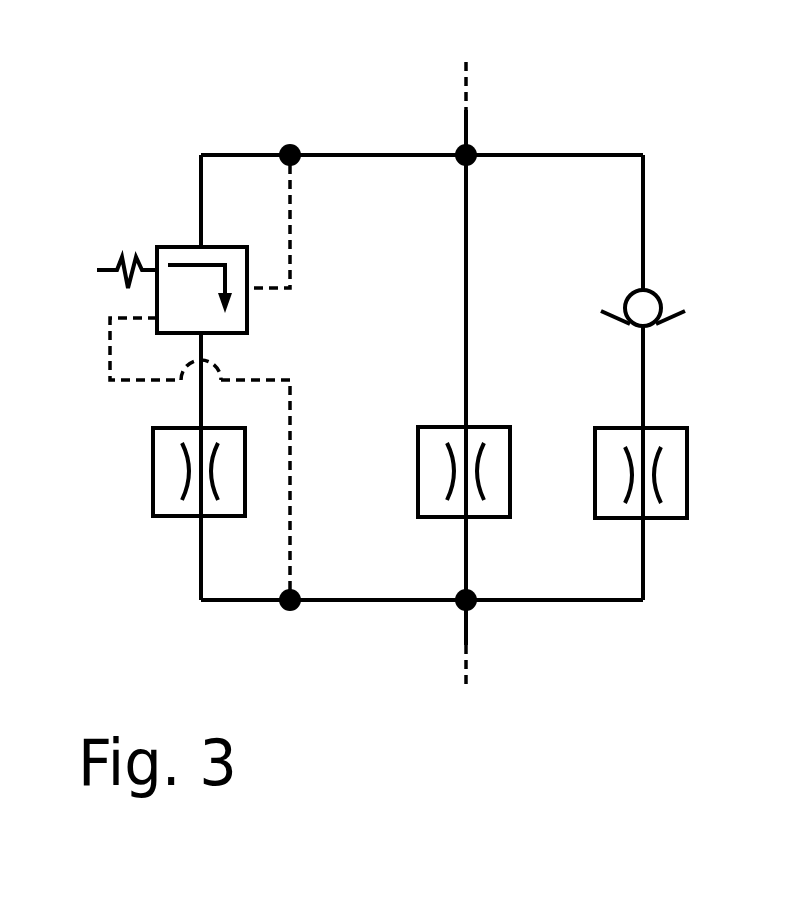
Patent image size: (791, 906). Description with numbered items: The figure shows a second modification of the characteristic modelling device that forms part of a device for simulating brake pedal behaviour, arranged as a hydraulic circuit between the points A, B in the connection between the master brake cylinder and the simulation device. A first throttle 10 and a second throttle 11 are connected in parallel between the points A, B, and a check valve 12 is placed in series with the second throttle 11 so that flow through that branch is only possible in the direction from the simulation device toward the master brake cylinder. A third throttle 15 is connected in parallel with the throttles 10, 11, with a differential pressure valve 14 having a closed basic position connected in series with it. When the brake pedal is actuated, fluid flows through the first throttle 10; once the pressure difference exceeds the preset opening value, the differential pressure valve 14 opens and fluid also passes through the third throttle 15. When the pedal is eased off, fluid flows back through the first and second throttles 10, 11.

The first throttle 10 is at (418, 442).
The second throttle 11 is at (686, 440).
The check valve 12 is at (645, 305).
The differential pressure valve 14 is at (155, 253).
The third throttle 15 is at (153, 498).
The point A is at (475, 148).
The point B is at (457, 605).